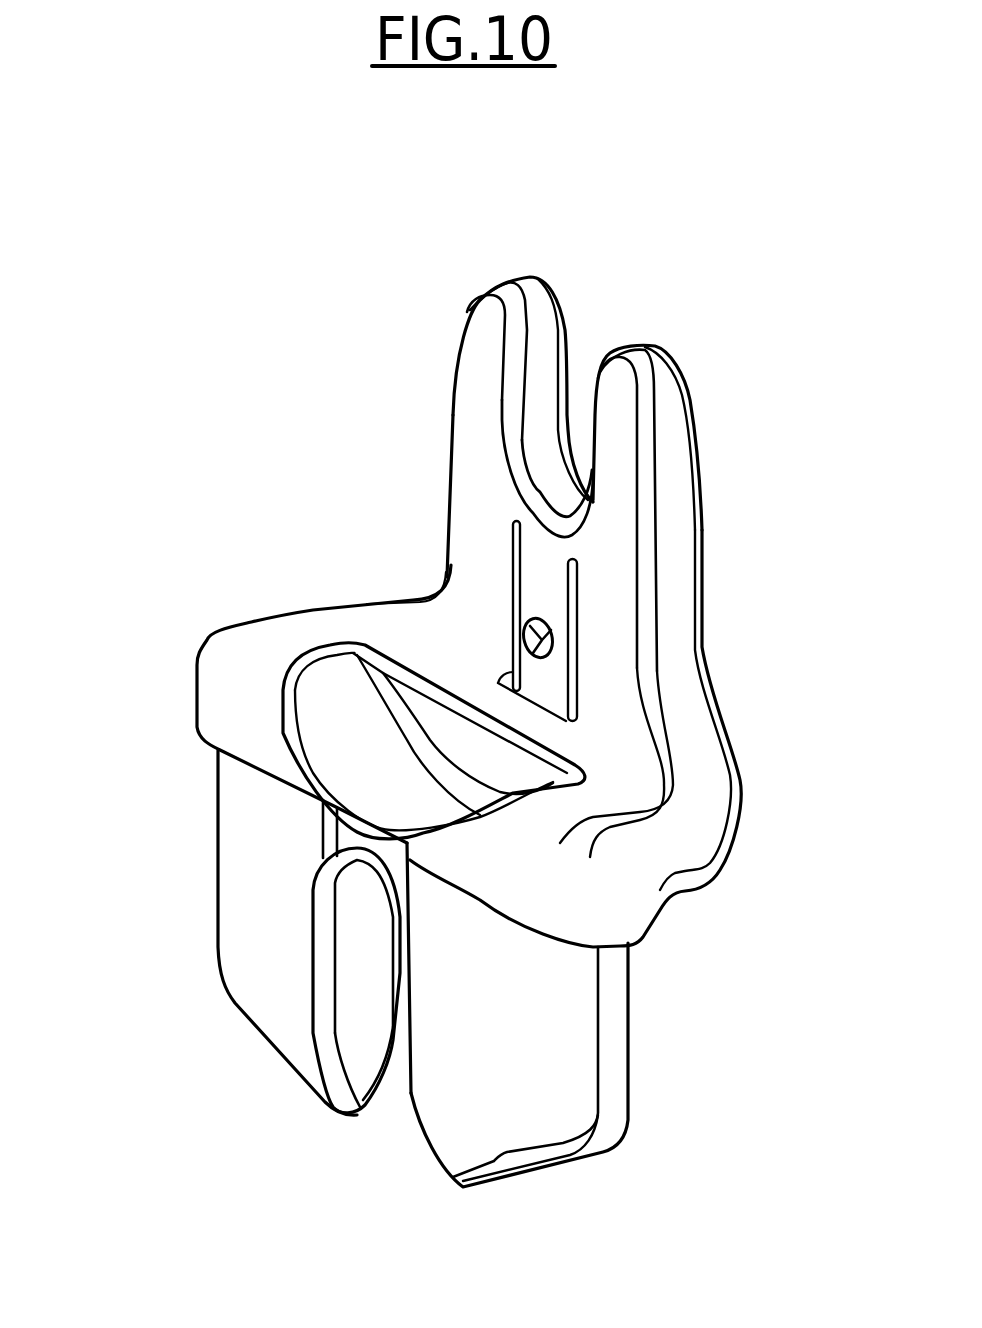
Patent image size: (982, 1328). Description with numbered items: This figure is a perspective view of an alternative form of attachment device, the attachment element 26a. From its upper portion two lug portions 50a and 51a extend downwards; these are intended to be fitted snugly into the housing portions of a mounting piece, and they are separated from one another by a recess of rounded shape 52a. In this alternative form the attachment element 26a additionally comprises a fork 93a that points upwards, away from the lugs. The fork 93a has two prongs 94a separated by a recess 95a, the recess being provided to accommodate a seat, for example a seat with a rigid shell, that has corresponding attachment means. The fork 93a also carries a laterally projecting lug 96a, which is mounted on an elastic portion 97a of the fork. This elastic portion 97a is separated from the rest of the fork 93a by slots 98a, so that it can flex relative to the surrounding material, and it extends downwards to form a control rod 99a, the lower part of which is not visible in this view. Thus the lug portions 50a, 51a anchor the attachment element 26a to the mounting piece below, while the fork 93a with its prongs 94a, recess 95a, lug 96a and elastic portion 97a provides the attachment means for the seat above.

The attachment element 26a is at (398, 504).
The fork 93a is at (718, 483).
The prongs 94a is at (527, 292).
The recess 95a is at (553, 490).
The laterally projecting lug 96a is at (550, 645).
The elastic portion 97a is at (544, 579).
The slots 98a is at (519, 543).
The control rod 99a is at (544, 691).
The lug portion 50a is at (272, 957).
The lug portion 51a is at (500, 1033).
The recess of rounded shape 52a is at (373, 870).